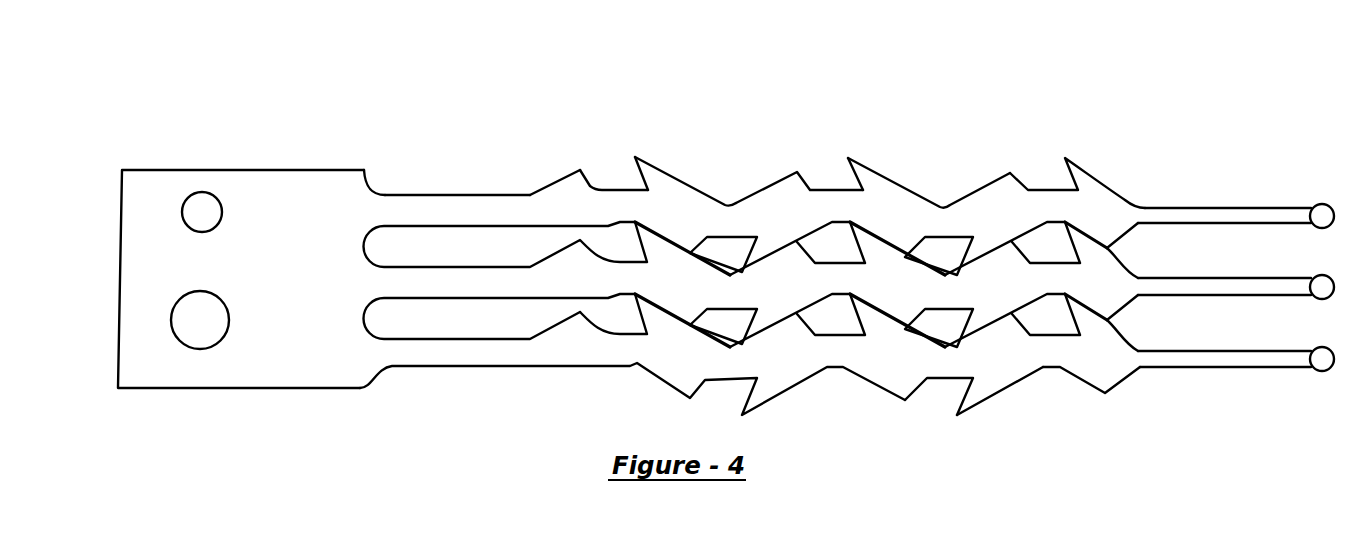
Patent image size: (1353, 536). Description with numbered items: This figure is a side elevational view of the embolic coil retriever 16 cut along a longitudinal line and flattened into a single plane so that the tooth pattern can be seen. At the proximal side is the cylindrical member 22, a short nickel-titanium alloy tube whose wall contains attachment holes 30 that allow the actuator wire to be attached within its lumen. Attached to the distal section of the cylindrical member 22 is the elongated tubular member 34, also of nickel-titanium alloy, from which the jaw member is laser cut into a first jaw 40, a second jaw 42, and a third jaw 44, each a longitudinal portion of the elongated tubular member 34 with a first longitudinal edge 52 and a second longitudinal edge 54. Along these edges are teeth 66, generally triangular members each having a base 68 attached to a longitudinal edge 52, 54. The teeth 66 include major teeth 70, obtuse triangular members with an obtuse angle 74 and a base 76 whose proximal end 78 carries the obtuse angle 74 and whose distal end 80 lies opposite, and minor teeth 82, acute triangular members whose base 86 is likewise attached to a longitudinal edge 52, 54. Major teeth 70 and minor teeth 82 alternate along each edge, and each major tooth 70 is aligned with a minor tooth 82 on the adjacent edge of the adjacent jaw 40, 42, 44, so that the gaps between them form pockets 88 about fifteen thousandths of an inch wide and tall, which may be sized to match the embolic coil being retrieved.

The embolic coil retriever 16 is at (451, 150).
The cylindrical member 22 is at (252, 169).
The attachment holes 30 is at (200, 318).
The elongated tubular member 34 is at (410, 195).
The first jaw 40 is at (1097, 208).
The second jaw 42 is at (1098, 280).
The third jaw 44 is at (1105, 355).
The first longitudinal edge 52 is at (435, 340).
The second longitudinal edge 54 is at (513, 367).
The teeth 66 is at (588, 183).
The base 68 is at (560, 187).
The major teeth 70 is at (863, 158).
The obtuse angle 74 is at (970, 378).
The base 76 is at (1018, 363).
The proximal end 78 is at (670, 176).
The distal end 80 is at (698, 207).
The minor teeth 82 is at (992, 178).
The base 86 is at (1013, 203).
The pockets 88 is at (842, 173).